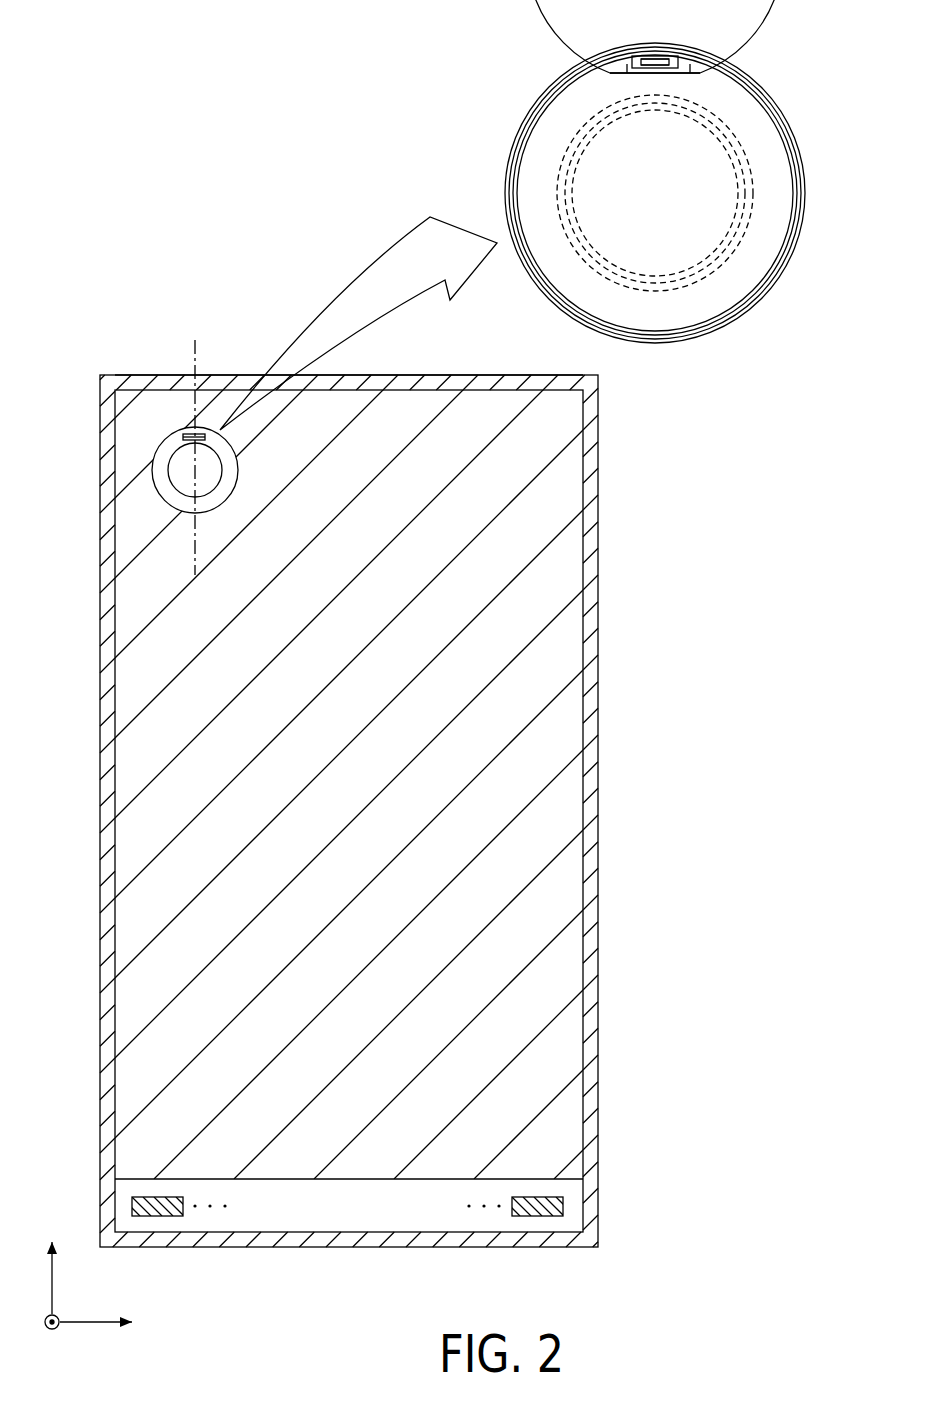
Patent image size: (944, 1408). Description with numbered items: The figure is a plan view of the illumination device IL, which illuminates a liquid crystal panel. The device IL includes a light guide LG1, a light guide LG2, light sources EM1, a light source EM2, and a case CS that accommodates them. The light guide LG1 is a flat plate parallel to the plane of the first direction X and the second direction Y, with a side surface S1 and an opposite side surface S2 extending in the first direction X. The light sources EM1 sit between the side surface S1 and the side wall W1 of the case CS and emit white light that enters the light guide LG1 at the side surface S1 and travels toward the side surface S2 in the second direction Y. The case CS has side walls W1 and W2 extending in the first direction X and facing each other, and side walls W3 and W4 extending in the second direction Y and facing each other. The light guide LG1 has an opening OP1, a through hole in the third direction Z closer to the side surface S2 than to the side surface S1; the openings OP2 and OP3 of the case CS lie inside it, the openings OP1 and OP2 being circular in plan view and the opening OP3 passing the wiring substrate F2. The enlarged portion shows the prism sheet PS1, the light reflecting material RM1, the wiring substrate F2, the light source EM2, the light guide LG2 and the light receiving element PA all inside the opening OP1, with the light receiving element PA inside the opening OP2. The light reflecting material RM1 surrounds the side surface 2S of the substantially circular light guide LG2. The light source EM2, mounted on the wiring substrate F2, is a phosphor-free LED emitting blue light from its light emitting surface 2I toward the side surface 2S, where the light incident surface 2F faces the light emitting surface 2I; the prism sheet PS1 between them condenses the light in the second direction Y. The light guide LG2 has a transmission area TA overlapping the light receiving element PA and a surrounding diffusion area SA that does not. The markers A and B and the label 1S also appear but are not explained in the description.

The case CS is at (588, 1251).
The side wall W1 is at (294, 1240).
The side wall W2 is at (423, 384).
The side wall W3 is at (108, 748).
The side wall W4 is at (593, 772).
The side surface S1 is at (433, 1181).
The side surface S2 is at (516, 384).
The light guide LG1 is at (568, 620).
The light sources EM1 is at (158, 1218).
The illumination device IL is at (654, 886).
The opening OP1 is at (160, 474).
The opening OP2 is at (223, 464).
The opening OP3 is at (190, 433).
The section line end A is at (194, 587).
The section line end B is at (194, 441).
The first direction X is at (106, 1324).
The second direction Y is at (50, 1259).
The third direction Z is at (42, 1330).
The prism sheet PS1 is at (585, 62).
The light reflecting material RM1 is at (766, 90).
The side surface 2S is at (763, 118).
The light guide LG2 is at (771, 137).
The light source EM2 is at (683, 63).
The light incident surface 2F is at (624, 70).
The first side surface 1S is at (638, 58).
The wiring substrate F2 is at (663, 58).
The light emitting surface 2I is at (648, 78).
The light receiving element PA is at (745, 195).
The diffusion area SA is at (762, 225).
The transmission area TA is at (710, 229).